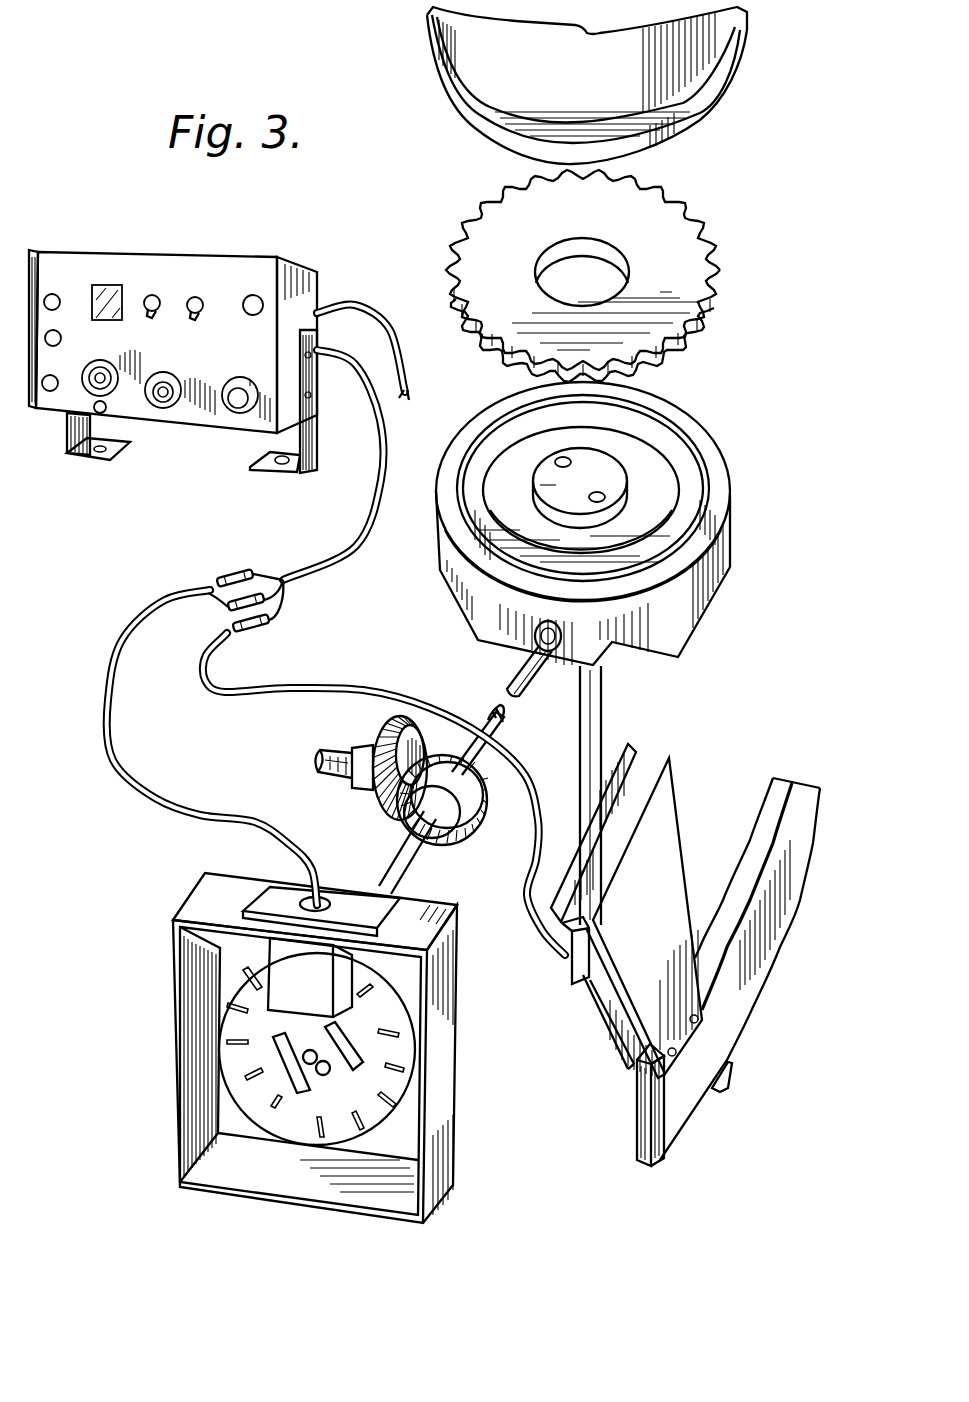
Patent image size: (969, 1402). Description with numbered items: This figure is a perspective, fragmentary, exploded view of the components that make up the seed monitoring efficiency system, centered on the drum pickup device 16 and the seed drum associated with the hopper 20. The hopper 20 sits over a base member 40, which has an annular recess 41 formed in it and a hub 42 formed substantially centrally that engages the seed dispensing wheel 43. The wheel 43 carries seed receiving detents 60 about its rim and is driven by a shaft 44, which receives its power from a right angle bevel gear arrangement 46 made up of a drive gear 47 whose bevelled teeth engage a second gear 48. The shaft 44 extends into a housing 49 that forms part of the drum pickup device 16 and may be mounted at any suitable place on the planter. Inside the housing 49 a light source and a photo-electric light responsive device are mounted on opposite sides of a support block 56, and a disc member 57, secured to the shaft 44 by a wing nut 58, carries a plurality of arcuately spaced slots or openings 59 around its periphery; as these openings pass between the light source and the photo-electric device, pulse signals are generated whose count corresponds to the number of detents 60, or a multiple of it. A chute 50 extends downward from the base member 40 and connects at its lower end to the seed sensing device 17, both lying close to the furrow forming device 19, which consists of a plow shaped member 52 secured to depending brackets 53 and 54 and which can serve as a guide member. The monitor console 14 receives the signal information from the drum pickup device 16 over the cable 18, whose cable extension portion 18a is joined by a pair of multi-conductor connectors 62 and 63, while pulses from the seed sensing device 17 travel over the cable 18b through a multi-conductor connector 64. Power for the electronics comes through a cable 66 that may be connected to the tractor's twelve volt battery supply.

The monitor console 14 is at (213, 210).
The drum pickup device 16 is at (163, 925).
The seed sensing device 17 is at (583, 973).
The cable 18 is at (339, 538).
The cable extension portion 18a is at (108, 690).
The cable 18b is at (370, 647).
The furrow forming device 19 is at (763, 1033).
The hopper 20 is at (745, 78).
The base member 40 is at (720, 564).
The annular recess 41 is at (693, 476).
The hub 42 is at (630, 486).
The seed dispensing wheel 43 is at (688, 254).
The shaft 44 is at (493, 710).
The right angle bevel gear arrangement 46 is at (343, 787).
The drive gear 47 is at (390, 730).
The second gear 48 is at (470, 840).
The housing 49 is at (177, 1050).
The chute 50 is at (600, 702).
The plow shaped member 52 is at (797, 877).
The depending bracket 53 is at (667, 823).
The depending bracket 54 is at (630, 767).
The support block 56 is at (329, 984).
The disc member 57 is at (400, 1080).
The wing nut 58 is at (325, 1075).
The slots or openings 59 is at (378, 1098).
The seed receiving detents 60 is at (708, 313).
The multi-conductor connector 62 is at (218, 577).
The multi-conductor connector 63 is at (256, 592).
The multi-conductor connector 64 is at (277, 623).
The cable 66 is at (410, 303).